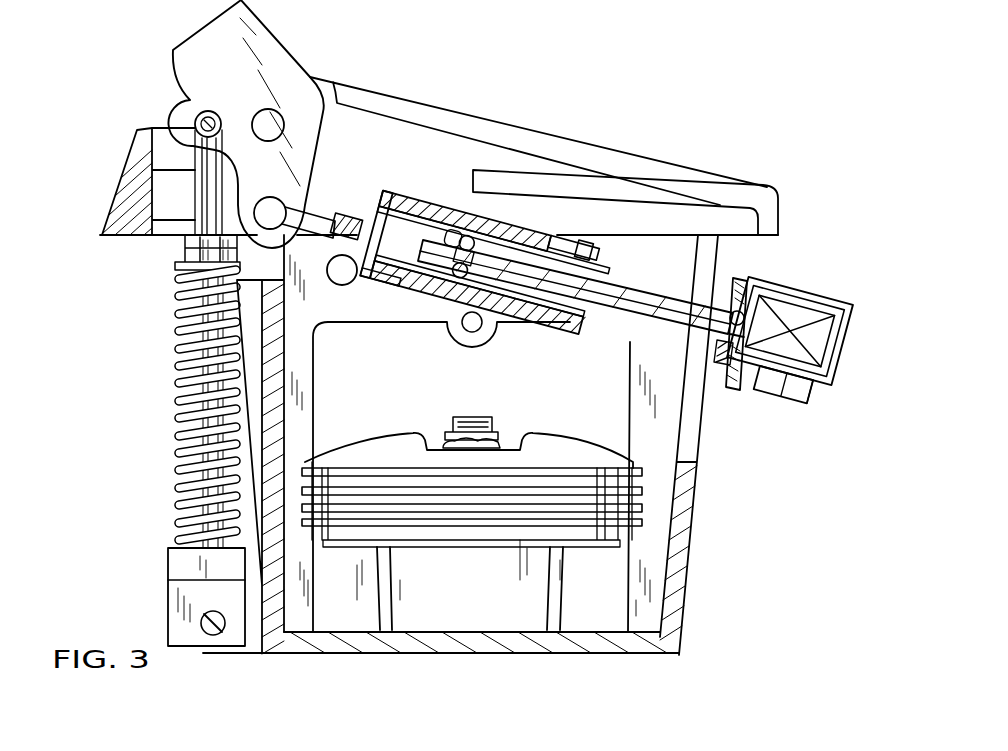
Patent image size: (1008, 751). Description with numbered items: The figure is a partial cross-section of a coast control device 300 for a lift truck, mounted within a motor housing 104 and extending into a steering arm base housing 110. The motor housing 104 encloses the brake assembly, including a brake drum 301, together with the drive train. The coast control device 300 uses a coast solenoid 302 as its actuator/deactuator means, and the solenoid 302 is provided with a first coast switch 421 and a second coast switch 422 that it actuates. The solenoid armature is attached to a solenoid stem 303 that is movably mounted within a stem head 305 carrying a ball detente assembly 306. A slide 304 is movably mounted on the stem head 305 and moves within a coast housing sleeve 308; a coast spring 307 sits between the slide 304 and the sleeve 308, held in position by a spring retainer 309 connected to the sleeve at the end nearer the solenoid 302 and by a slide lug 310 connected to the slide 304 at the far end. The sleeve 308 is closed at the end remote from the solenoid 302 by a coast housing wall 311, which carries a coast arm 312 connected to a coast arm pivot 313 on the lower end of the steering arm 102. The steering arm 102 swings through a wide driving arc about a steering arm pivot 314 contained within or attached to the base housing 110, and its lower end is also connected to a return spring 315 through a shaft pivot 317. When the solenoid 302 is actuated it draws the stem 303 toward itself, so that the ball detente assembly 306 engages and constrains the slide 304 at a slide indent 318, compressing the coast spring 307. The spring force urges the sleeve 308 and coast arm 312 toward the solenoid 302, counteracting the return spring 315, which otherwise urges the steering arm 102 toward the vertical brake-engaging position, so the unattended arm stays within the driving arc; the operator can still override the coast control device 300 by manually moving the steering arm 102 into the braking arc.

The steering arm 102 is at (188, 60).
The motor housing 104 is at (682, 512).
The steering arm base housing 110 is at (110, 198).
The coast control device 300 is at (611, 337).
The brake drum 301 is at (630, 535).
The coast solenoid 302 is at (802, 305).
The solenoid stem 303 is at (618, 288).
The slide 304 is at (516, 232).
The stem head 305 is at (443, 265).
The ball detente assembly 306 is at (385, 288).
The coast spring 307 is at (553, 238).
The coast housing sleeve 308 is at (478, 192).
The spring retainer 309 is at (596, 252).
The slide lug 310 is at (388, 200).
The coast housing wall 311 is at (380, 190).
The coast arm 312 is at (333, 222).
The coast arm pivot 313 is at (272, 199).
The steering arm pivot 314 is at (270, 112).
The return spring 315 is at (177, 497).
The shaft pivot 317 is at (200, 117).
The slide indent 318 is at (465, 233).
The first coast switch 421 is at (810, 394).
The second coast switch 422 is at (763, 398).